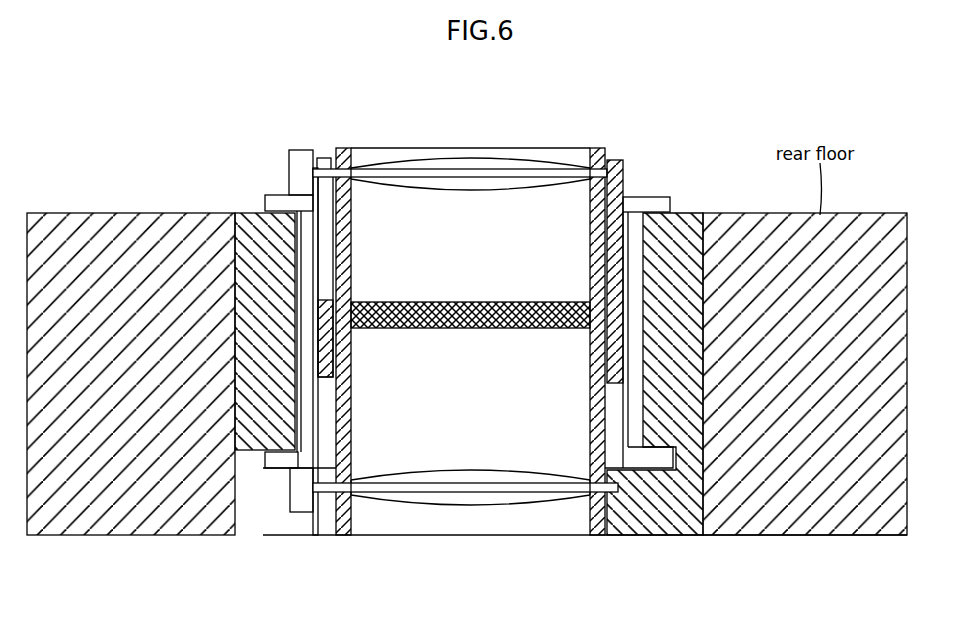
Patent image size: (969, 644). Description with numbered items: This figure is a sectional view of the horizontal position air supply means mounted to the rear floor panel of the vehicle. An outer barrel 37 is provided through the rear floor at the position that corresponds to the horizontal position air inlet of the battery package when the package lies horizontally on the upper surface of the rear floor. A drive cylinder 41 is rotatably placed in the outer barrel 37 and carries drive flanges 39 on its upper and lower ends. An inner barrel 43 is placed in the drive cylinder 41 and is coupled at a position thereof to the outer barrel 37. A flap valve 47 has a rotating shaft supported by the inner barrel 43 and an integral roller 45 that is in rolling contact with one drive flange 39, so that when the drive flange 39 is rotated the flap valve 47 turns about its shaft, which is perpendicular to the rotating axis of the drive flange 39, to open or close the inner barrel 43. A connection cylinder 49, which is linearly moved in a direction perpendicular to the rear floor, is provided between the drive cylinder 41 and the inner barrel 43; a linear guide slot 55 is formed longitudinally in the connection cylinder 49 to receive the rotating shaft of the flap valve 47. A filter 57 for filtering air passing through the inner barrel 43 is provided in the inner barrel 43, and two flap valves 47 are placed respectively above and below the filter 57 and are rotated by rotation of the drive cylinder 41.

The outer barrel 37 is at (685, 232).
The drive flange 39 is at (270, 196).
The drive cylinder 41 is at (305, 458).
The inner barrel 43 is at (350, 505).
The roller 45 is at (298, 150).
The flap valve 47 is at (468, 160).
The connection cylinder 49 is at (612, 160).
The linear guide slot 55 is at (323, 158).
The filter 57 is at (490, 330).